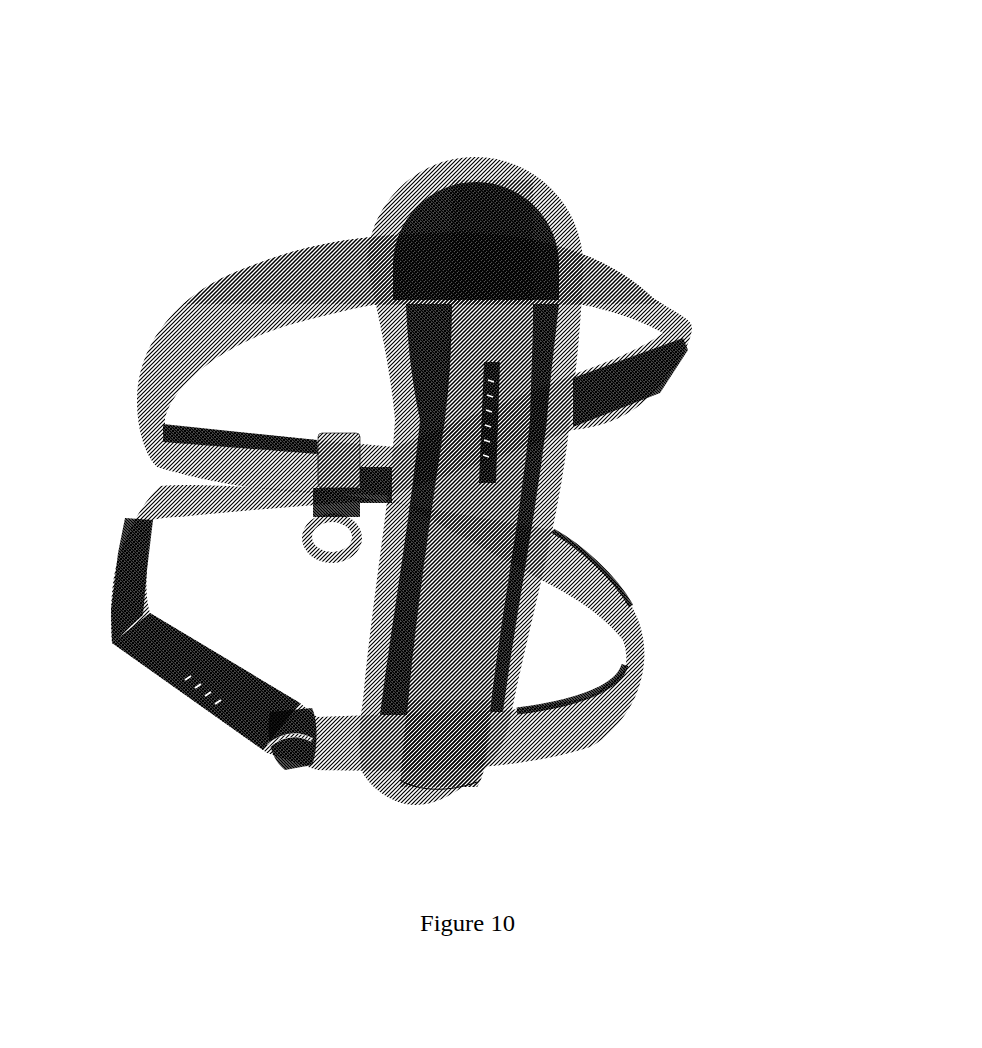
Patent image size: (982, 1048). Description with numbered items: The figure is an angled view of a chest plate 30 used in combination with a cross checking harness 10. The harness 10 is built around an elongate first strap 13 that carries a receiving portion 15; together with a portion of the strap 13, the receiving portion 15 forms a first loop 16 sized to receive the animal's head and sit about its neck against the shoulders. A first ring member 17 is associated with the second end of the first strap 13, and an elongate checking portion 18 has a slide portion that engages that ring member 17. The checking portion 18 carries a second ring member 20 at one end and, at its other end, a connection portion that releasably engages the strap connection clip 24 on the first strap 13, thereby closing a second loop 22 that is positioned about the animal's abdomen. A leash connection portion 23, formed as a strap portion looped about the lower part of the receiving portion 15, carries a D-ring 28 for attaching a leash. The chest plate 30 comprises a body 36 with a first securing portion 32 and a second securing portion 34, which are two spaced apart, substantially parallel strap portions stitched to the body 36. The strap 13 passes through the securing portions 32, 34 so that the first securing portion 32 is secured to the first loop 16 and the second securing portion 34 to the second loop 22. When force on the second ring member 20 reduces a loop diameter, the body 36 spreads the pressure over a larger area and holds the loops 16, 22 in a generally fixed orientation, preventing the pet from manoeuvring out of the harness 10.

The checking harness 10 is at (140, 468).
The elongate first strap 13 is at (653, 298).
The receiving portion 15 is at (340, 460).
The first loop 16 is at (315, 343).
The first ring member 17 is at (285, 720).
The elongate checking portion 18 is at (200, 705).
The second ring member 20 is at (270, 753).
The second loop 22 is at (255, 620).
The leash connection portion 23 is at (317, 517).
The strap connection clip 24 is at (98, 590).
The D-ring 28 is at (333, 553).
The chest plate 30 is at (550, 448).
The first securing portion 32 is at (510, 252).
The second securing portion 34 is at (443, 748).
The body 36 is at (536, 488).